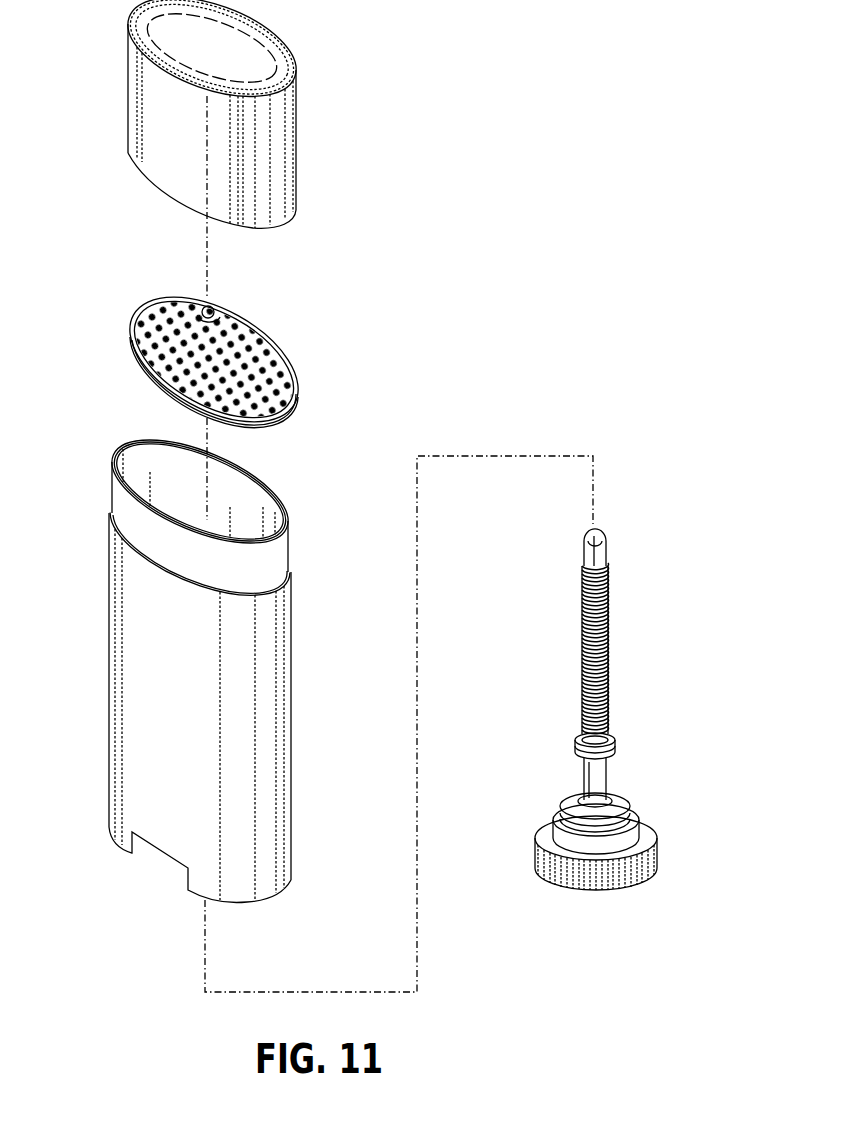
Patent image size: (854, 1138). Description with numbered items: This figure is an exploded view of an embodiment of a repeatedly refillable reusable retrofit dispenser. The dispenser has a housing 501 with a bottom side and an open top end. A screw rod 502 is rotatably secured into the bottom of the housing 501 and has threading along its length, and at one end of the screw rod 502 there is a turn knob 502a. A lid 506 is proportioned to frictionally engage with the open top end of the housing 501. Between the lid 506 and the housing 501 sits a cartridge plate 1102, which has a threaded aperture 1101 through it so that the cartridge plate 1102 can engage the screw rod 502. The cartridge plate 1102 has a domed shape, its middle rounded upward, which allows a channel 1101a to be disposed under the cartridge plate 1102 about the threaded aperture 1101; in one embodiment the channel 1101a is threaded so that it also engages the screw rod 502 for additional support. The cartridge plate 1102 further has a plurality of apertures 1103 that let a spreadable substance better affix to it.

The lid 506 is at (297, 128).
The threaded aperture 1101 is at (188, 291).
The channel 1101a is at (164, 388).
The cartridge plate 1102 is at (268, 337).
The apertures 1103 is at (213, 296).
The housing 501 is at (122, 557).
The screw rod 502 is at (608, 673).
The turn knob 502a is at (657, 838).